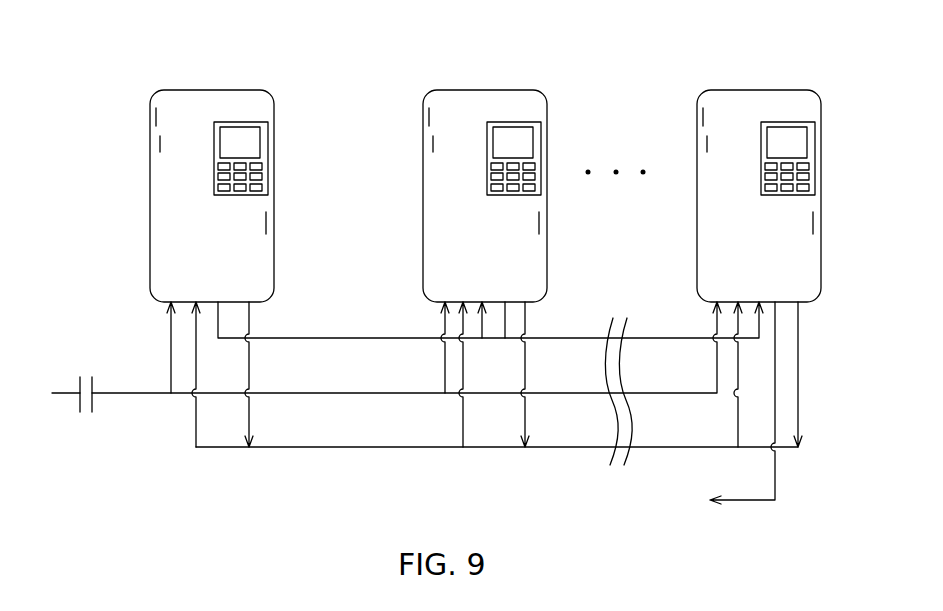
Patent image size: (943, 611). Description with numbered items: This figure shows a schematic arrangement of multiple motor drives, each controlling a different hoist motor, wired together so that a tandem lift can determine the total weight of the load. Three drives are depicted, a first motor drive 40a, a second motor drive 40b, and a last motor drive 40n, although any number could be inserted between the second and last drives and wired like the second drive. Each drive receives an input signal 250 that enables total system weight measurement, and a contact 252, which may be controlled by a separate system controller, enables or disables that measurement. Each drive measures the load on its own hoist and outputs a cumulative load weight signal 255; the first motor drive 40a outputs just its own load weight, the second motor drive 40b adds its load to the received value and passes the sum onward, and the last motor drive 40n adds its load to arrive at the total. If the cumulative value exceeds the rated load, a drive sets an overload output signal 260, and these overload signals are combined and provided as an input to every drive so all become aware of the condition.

The first motor drive 40a is at (150, 114).
The second motor drive 40b is at (423, 114).
The last motor drive 40n is at (697, 114).
The input signal 250 is at (137, 395).
The contact 252 is at (87, 425).
The cumulative load weight signal 255 is at (285, 340).
The overload output signal 260 is at (250, 316).